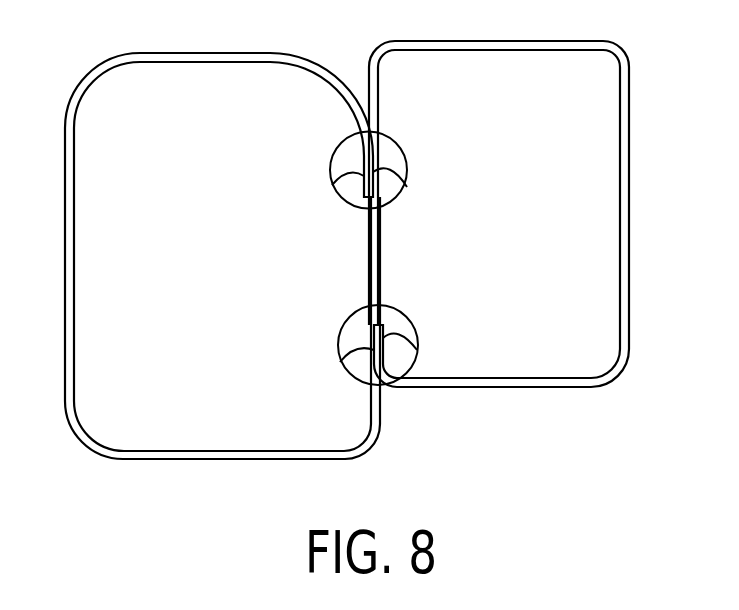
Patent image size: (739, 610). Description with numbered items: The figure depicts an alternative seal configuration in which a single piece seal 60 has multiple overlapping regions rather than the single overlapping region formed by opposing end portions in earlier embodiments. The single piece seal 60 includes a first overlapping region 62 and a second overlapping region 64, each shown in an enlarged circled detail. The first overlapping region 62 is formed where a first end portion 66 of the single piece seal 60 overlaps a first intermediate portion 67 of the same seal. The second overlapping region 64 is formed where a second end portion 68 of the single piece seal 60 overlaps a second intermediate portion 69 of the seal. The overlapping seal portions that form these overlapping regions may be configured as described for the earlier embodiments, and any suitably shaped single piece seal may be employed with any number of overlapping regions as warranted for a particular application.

The single piece seal 60 is at (99, 493).
The first overlapping region 62 is at (407, 157).
The second overlapping region 64 is at (408, 318).
The first end portion 66 is at (332, 185).
The first intermediate portion 67 is at (407, 187).
The second end portion 68 is at (417, 349).
The second intermediate portion 69 is at (340, 362).